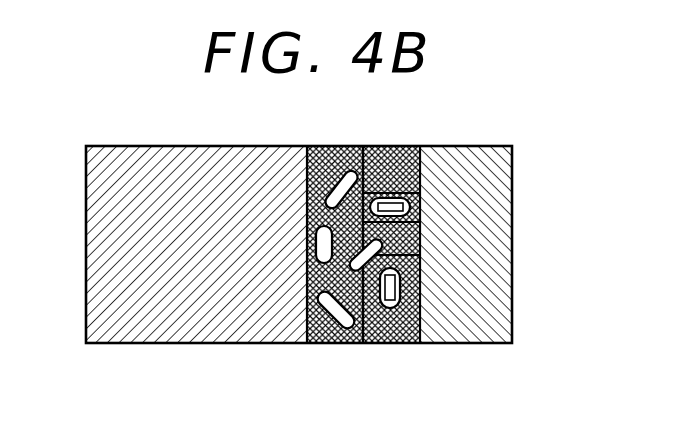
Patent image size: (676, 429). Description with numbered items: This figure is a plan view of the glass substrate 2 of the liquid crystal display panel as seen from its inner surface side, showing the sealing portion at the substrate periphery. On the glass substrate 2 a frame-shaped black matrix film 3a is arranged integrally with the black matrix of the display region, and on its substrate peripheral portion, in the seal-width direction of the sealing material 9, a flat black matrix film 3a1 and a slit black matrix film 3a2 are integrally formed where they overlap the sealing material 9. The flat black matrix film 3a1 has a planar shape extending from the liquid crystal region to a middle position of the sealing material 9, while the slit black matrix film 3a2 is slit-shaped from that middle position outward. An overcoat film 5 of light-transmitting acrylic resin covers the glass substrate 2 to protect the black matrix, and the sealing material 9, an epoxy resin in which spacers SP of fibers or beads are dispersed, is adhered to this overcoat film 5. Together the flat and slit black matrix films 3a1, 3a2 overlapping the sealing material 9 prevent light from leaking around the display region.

The glass substrate 2 is at (512, 222).
The overcoat film 5 is at (505, 311).
The frame-shaped black matrix film 3a is at (182, 344).
The flat black matrix film 3a1 is at (362, 142).
The slit black matrix film 3a2 is at (420, 142).
The spacers SP is at (307, 345).
The sealing material 9 is at (348, 344).